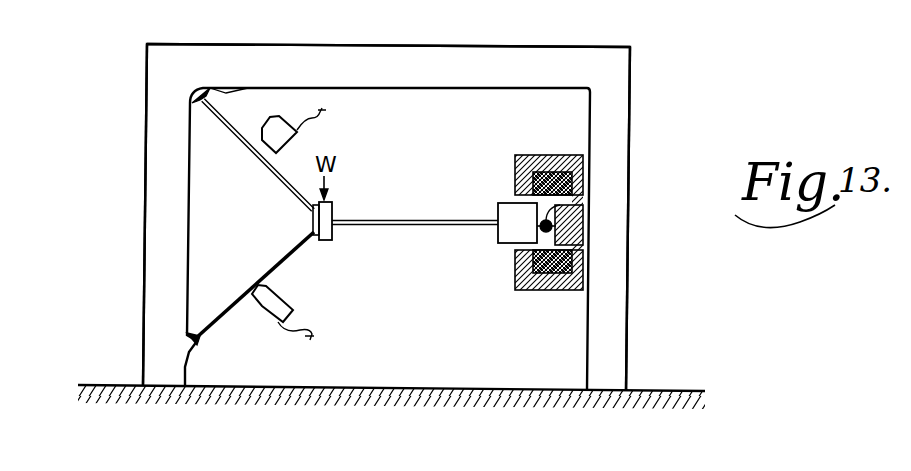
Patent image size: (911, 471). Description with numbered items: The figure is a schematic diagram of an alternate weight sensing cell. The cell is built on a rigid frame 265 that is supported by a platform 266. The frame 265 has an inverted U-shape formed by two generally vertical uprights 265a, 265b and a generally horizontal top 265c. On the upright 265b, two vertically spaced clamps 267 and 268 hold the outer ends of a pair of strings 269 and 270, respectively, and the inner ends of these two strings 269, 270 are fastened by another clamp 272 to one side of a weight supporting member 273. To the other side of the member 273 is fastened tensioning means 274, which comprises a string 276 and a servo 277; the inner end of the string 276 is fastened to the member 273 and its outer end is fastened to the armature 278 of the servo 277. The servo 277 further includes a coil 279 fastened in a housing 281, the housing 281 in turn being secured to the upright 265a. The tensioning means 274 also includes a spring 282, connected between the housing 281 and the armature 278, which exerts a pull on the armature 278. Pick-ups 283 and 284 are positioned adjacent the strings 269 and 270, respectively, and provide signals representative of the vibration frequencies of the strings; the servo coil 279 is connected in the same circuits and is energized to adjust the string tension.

The rigid frame 265 is at (632, 112).
The upright 265a is at (617, 324).
The upright 265b is at (158, 139).
The top 265c is at (522, 40).
The platform 266 is at (675, 392).
The clamp 267 is at (203, 341).
The clamp 268 is at (246, 80).
The string 269 is at (283, 258).
The string 270 is at (270, 168).
The clamp 272 is at (313, 208).
The weight supporting member 273 is at (334, 210).
The tensioning means 274 is at (489, 157).
The string 276 is at (418, 226).
The servo 277 is at (488, 282).
The armature 278 is at (498, 212).
The coil 279 is at (550, 172).
The housing 281 is at (553, 292).
The spring 282 is at (572, 201).
The pick-up 283 is at (277, 322).
The pick-up 284 is at (298, 135).